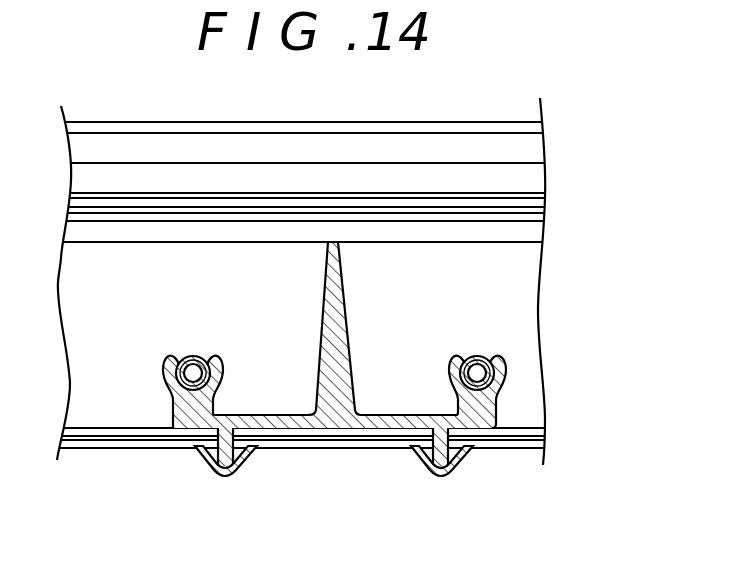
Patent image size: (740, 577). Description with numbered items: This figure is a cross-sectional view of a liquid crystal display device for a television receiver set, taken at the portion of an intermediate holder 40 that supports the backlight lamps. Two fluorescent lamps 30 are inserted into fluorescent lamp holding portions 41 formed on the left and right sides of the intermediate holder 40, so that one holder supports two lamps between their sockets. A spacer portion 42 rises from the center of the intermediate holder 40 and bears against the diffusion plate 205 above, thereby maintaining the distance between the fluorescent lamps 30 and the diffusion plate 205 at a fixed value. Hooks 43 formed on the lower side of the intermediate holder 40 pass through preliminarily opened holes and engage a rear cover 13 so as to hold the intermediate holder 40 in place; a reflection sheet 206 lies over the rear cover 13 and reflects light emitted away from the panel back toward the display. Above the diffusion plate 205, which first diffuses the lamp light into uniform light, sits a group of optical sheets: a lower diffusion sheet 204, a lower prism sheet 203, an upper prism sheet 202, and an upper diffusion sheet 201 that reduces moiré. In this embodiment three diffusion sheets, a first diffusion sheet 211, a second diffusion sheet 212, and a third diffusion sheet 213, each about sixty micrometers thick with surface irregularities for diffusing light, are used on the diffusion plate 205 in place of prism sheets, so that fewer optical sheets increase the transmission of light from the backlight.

The rear cover 13 is at (552, 443).
The fluorescent lamp 30 is at (477, 355).
The intermediate holder 40 is at (307, 410).
The fluorescent lamp holding portion 41 is at (449, 372).
The spacer portion 42 is at (341, 278).
The hook 43 is at (441, 472).
The upper diffusion sheet 201 is at (533, 175).
The upper prism sheet 202 is at (530, 147).
The lower prism sheet 203 is at (535, 127).
The lower diffusion sheet 204 is at (543, 196).
The diffusion plate 205 is at (540, 233).
The reflection sheet 206 is at (553, 433).
The first diffusion sheet 211 is at (542, 220).
The second diffusion sheet 212 is at (542, 212).
The third diffusion sheet 213 is at (540, 203).